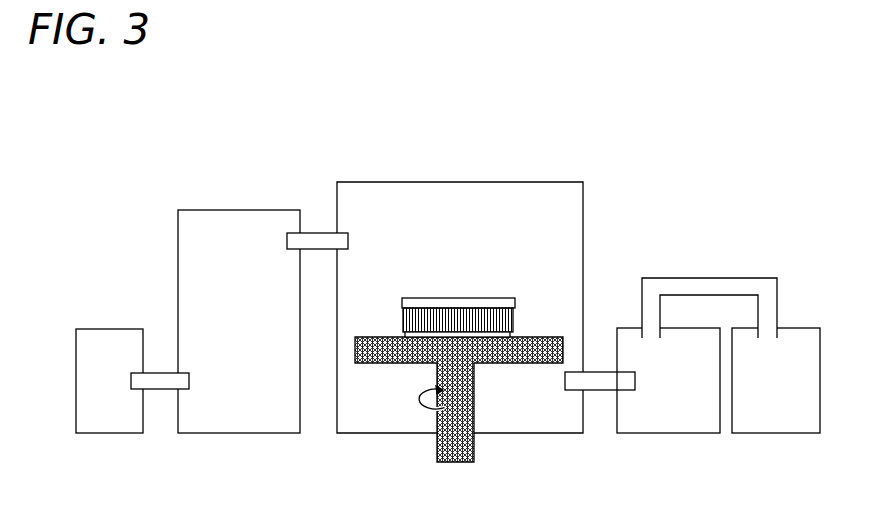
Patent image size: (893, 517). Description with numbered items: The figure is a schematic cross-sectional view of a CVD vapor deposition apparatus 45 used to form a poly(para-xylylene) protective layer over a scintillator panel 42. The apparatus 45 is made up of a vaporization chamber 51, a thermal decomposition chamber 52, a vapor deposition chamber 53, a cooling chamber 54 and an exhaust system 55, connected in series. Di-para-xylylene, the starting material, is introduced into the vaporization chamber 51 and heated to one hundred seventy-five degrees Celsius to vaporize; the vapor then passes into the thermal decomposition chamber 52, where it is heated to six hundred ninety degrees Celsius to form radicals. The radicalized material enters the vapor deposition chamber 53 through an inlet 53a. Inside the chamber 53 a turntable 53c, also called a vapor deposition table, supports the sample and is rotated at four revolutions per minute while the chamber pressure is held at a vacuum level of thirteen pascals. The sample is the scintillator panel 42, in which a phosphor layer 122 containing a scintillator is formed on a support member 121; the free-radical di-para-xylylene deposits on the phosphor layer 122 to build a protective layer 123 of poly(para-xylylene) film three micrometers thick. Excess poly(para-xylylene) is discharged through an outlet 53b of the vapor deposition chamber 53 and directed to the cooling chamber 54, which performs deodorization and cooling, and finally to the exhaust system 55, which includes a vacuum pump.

The CVD vapor deposition apparatus 45 is at (443, 102).
The scintillator panel 42 is at (470, 278).
The vaporization chamber 51 is at (107, 343).
The thermal decomposition chamber 52 is at (227, 223).
The vapor deposition chamber 53 is at (387, 195).
The inlet 53a is at (313, 228).
The outlet 53b is at (605, 392).
The turntable 53c is at (395, 367).
The cooling chamber 54 is at (672, 413).
The exhaust system 55 is at (783, 413).
The support member 121 is at (513, 332).
The phosphor layer 122 is at (513, 313).
The protective layer 123 is at (508, 298).